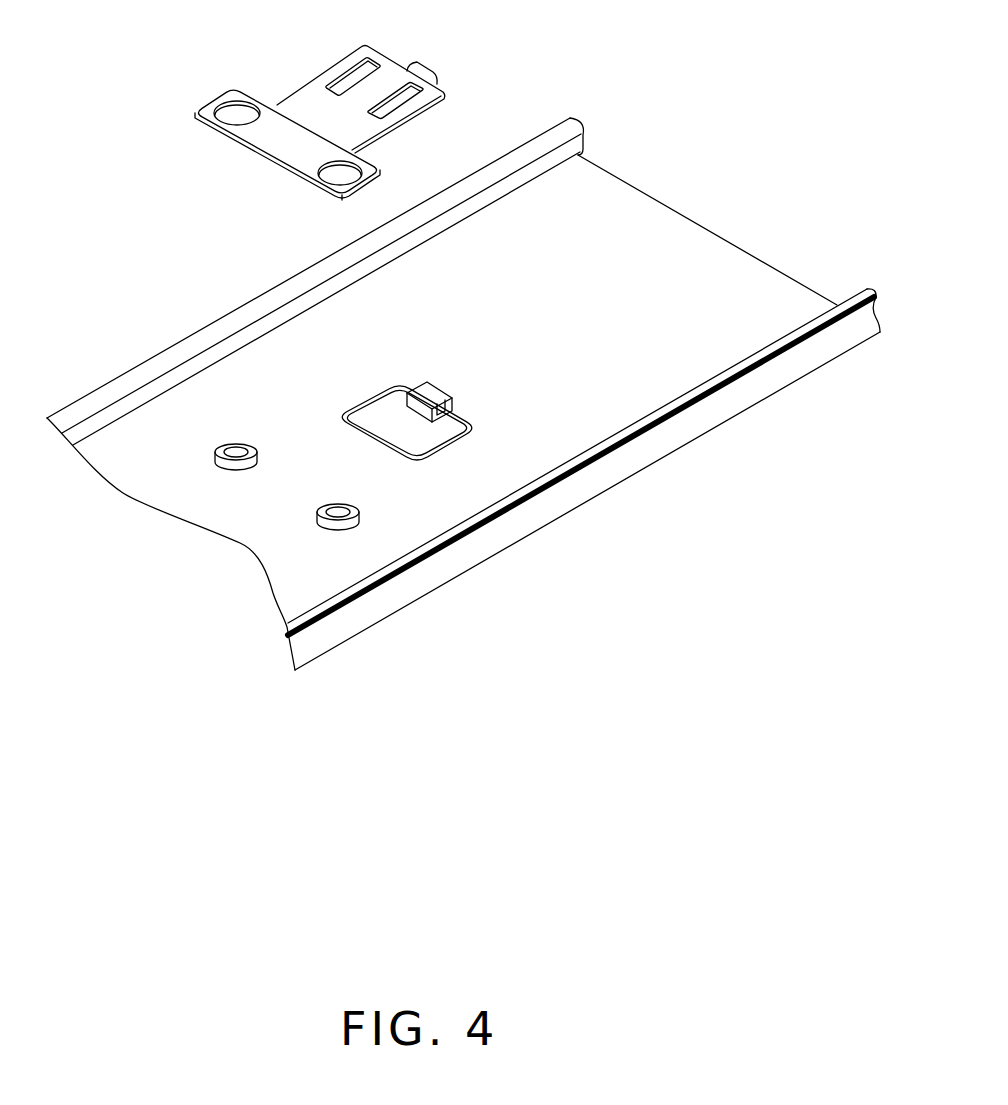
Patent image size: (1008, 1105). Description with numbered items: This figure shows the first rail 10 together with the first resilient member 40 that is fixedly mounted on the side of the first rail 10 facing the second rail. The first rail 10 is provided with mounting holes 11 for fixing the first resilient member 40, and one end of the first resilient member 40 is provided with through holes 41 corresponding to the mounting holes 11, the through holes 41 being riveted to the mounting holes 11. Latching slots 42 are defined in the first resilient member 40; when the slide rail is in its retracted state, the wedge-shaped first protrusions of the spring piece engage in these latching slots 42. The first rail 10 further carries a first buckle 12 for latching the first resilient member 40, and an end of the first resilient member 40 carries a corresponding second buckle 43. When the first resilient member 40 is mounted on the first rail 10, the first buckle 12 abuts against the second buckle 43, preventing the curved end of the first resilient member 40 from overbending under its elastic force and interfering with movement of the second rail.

The first rail 10 is at (662, 172).
The mounting holes 11 is at (346, 513).
The first buckle 12 is at (423, 393).
The first resilient member 40 is at (256, 161).
The through holes 41 is at (227, 112).
The latching slots 42 is at (360, 73).
The second buckle 43 is at (423, 63).